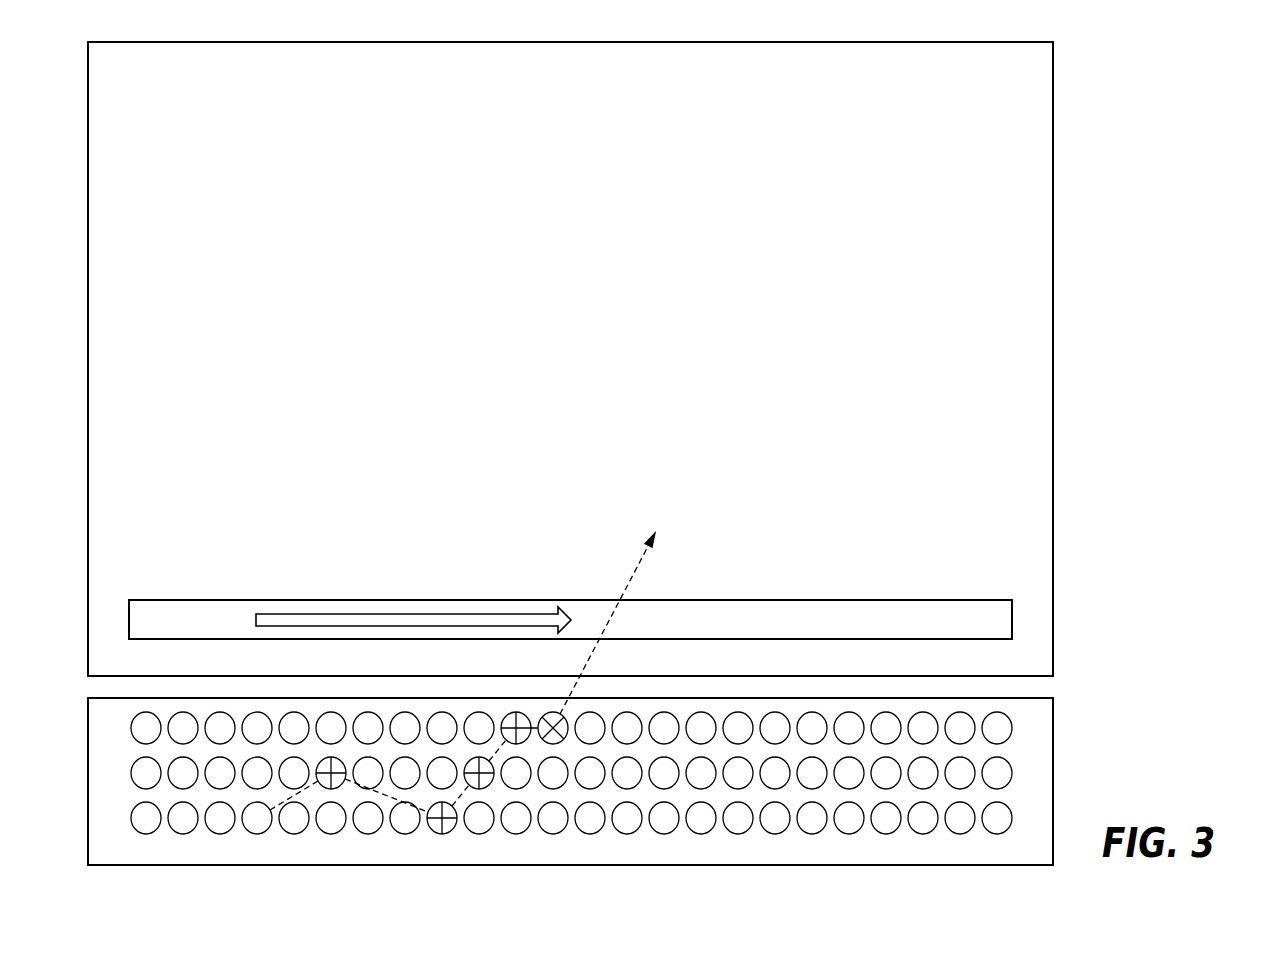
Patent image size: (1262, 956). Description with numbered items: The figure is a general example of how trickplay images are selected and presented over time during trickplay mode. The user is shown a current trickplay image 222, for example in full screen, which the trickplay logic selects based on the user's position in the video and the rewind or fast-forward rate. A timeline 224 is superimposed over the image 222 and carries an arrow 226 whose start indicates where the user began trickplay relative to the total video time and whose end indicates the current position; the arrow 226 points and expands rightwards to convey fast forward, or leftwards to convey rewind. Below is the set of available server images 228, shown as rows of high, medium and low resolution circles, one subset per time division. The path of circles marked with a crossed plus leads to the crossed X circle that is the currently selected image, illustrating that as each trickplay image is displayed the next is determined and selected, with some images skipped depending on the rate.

The trickplay image 222 is at (1012, 422).
The timeline 224 is at (1012, 612).
The arrow 226 is at (515, 620).
The server images 228 is at (1033, 792).